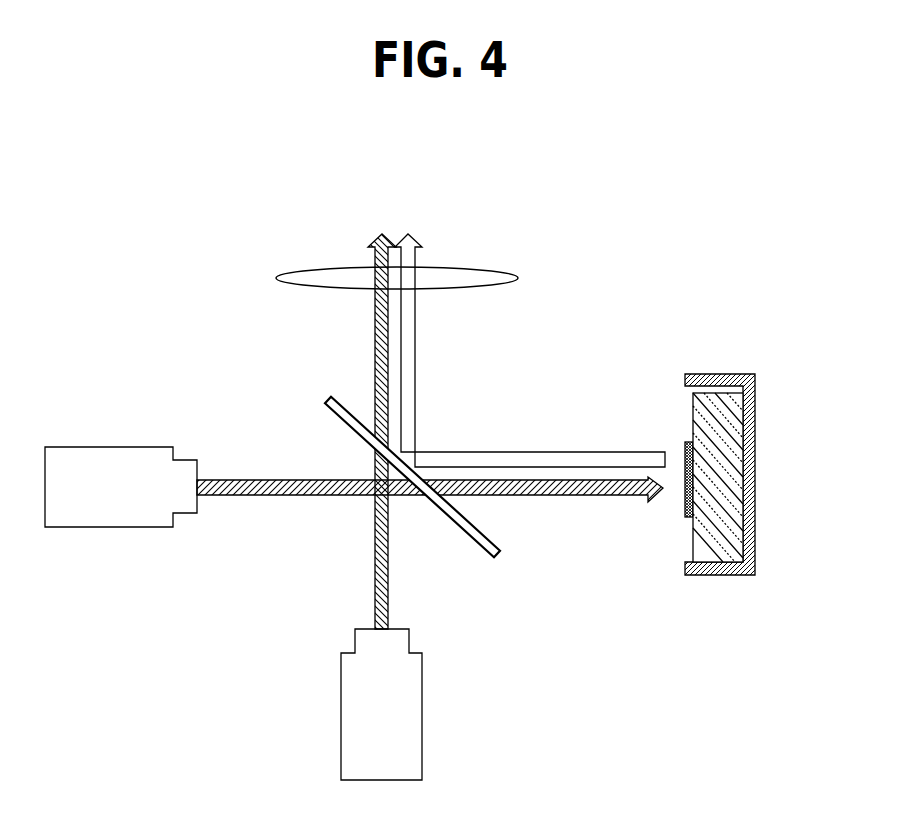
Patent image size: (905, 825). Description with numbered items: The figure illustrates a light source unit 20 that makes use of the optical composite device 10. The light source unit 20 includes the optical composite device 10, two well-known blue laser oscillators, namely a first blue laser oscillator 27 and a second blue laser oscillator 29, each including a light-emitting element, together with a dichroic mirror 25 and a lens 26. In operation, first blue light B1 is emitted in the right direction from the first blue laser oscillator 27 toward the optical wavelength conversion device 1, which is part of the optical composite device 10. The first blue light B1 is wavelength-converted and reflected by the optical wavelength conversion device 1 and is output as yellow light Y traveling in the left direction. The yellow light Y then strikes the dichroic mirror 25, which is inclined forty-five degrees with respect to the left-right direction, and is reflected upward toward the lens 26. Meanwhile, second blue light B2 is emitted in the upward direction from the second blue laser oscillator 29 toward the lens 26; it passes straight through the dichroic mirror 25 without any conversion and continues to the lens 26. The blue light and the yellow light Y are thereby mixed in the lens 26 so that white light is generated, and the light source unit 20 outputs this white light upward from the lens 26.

The light source unit 20 is at (355, 452).
The optical composite device 10 is at (733, 340).
The lens 26 is at (310, 277).
The dichroic mirror 25 is at (328, 400).
The first blue laser oscillator 27 is at (115, 470).
The second blue laser oscillator 29 is at (410, 708).
The optical wavelength conversion device 1 is at (675, 542).
The first blue light B1 is at (242, 522).
The second blue light B2 is at (421, 590).
The yellow light Y is at (522, 433).